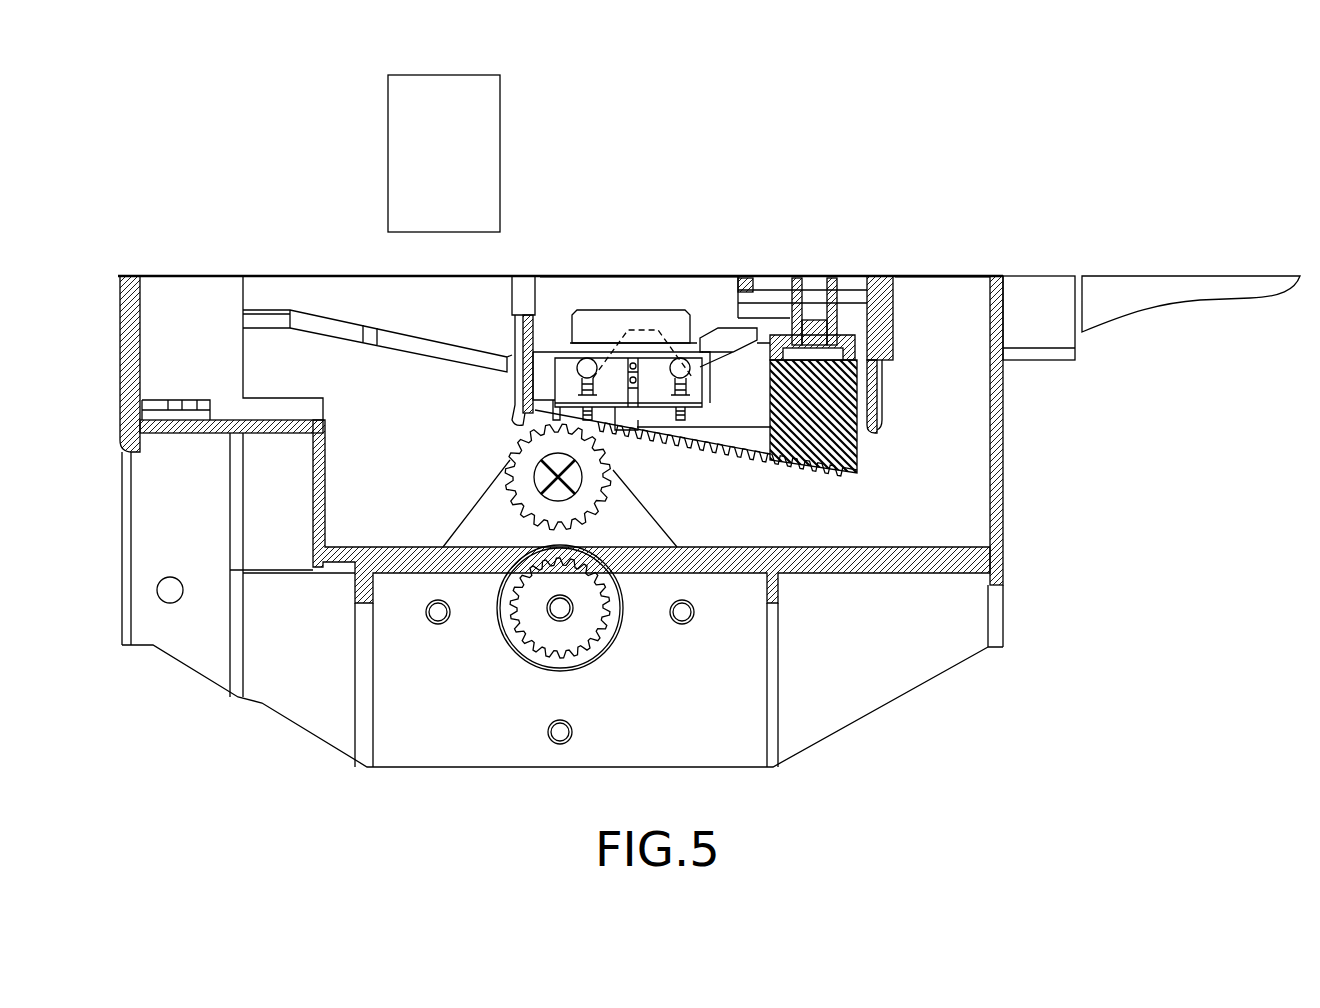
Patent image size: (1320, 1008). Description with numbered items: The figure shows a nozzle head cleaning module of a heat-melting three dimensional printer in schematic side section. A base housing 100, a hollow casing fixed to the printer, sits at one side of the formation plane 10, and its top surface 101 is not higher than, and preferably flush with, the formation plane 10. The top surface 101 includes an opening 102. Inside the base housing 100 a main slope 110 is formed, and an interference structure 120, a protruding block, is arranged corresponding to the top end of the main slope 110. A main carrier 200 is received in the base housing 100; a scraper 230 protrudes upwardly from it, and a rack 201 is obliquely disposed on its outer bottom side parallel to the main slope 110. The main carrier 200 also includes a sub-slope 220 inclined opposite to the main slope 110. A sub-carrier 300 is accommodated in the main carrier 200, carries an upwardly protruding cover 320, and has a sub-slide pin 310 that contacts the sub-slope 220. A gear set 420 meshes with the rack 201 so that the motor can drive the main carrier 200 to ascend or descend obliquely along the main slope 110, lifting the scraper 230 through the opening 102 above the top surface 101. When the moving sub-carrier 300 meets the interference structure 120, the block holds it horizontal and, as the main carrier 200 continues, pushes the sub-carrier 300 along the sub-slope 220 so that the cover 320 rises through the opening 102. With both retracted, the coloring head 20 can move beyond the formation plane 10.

The formation plane 10 is at (1193, 275).
The coloring head 20 is at (398, 148).
The base housing 100 is at (964, 270).
The top surface 101 is at (910, 277).
The opening 102 is at (593, 277).
The main slope 110 is at (395, 332).
The interference structure 120 is at (340, 317).
The main carrier 200 is at (880, 404).
The rack 201 is at (775, 470).
The sub-slope 220 is at (700, 333).
The scraper 230 is at (838, 302).
The sub-carrier 300 is at (562, 358).
The sub-slide pin 310 is at (678, 353).
The cover 320 is at (630, 313).
The gear set 420 is at (615, 470).